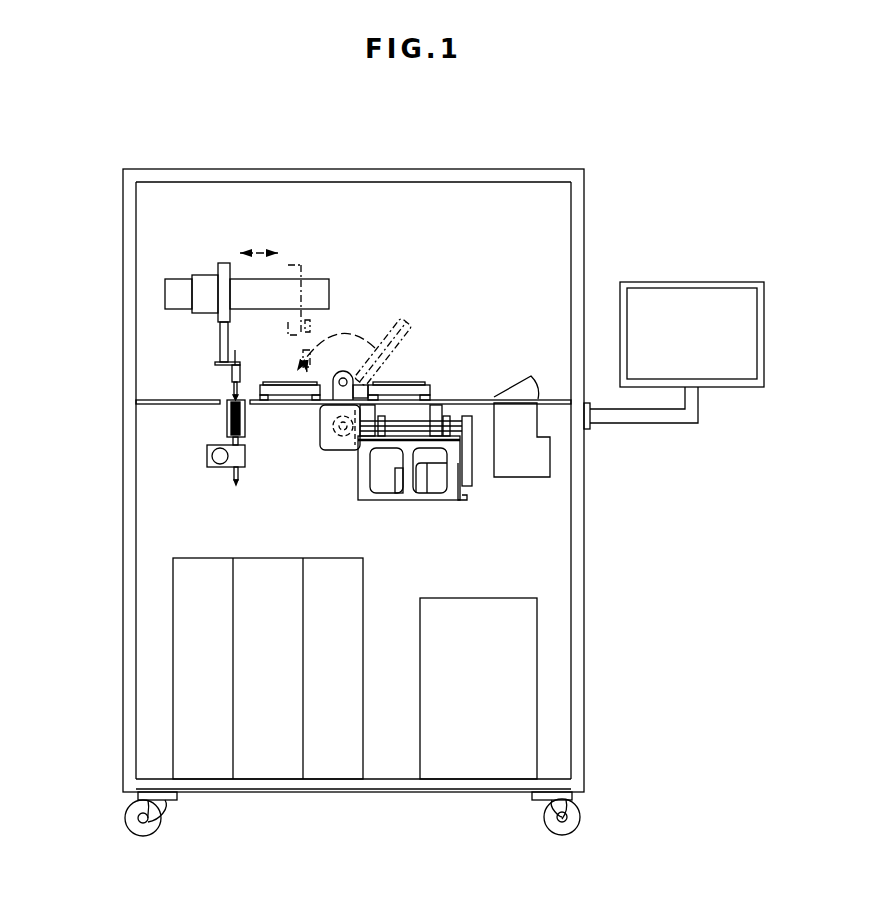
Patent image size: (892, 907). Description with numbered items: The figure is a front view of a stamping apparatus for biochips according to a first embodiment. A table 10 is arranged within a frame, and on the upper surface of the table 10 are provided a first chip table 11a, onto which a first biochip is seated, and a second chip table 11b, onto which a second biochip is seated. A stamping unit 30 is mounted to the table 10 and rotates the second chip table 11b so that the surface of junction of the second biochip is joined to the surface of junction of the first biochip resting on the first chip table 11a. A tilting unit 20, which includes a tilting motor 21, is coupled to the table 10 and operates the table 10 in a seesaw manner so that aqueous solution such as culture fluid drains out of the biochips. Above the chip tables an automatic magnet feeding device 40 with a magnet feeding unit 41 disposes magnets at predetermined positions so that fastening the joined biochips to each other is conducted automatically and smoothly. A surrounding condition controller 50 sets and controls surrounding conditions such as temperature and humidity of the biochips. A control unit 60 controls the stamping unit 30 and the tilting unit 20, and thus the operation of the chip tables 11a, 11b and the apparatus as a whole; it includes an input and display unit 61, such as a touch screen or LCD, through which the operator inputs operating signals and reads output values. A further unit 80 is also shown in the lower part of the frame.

The table 10 is at (272, 411).
The first chip table 11a is at (278, 382).
The second chip table 11b is at (395, 387).
The tilting unit 20 is at (476, 493).
The tilting motor 21 is at (437, 480).
The stamping unit 30 is at (318, 441).
The automatic magnet feeding device 40 is at (206, 258).
The magnet feeding unit 41 is at (222, 432).
The surrounding condition controller 50 is at (556, 452).
The control unit 60 is at (543, 688).
The input and display unit 61 is at (681, 300).
The power supply unit 80 is at (170, 673).